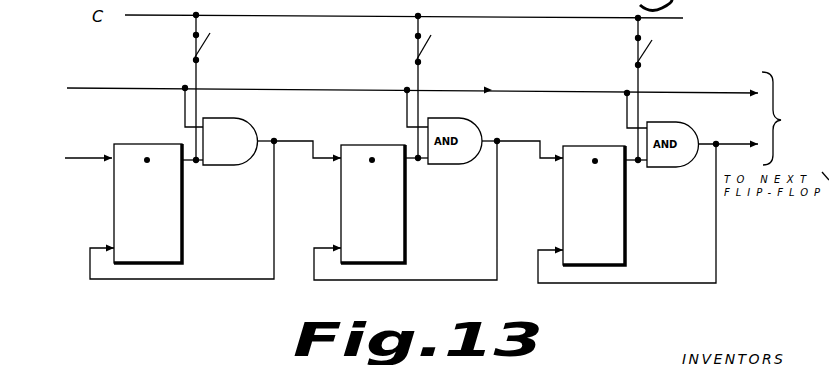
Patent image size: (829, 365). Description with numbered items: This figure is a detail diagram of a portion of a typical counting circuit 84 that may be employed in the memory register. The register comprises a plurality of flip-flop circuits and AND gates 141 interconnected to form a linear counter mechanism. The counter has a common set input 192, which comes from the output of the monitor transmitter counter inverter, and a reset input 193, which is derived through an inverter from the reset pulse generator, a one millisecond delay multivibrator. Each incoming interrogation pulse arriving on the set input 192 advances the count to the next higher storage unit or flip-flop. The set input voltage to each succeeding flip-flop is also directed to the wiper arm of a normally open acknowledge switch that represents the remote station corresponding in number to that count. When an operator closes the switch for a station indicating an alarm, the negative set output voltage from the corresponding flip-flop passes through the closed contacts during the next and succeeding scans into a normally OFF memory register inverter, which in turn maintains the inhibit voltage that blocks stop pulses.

The counting circuit 84 is at (160, 305).
The AND gate 141 is at (252, 118).
The common set input 192 is at (88, 90).
The reset input 193 is at (78, 158).